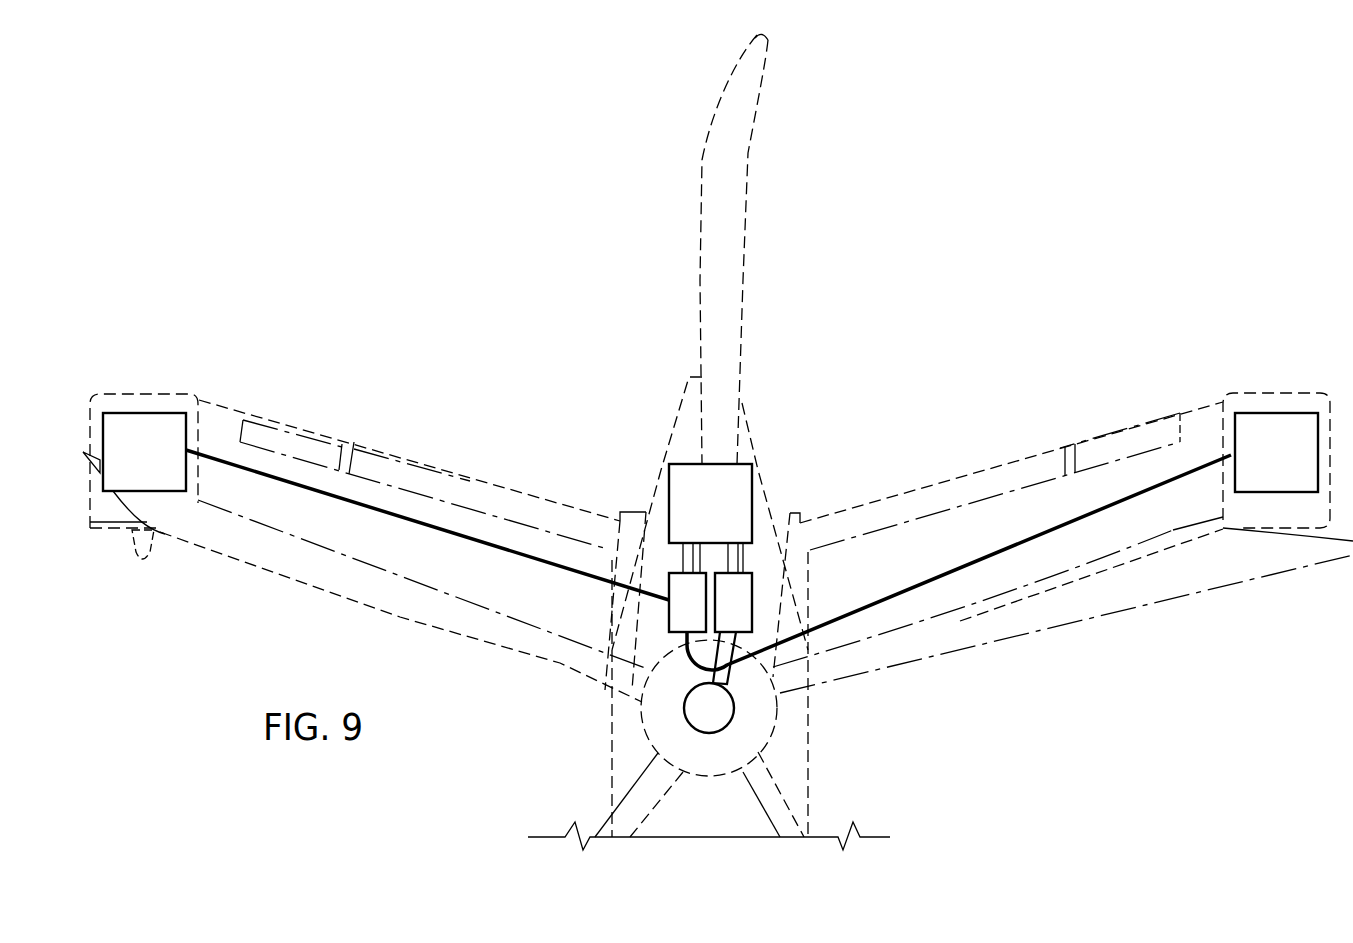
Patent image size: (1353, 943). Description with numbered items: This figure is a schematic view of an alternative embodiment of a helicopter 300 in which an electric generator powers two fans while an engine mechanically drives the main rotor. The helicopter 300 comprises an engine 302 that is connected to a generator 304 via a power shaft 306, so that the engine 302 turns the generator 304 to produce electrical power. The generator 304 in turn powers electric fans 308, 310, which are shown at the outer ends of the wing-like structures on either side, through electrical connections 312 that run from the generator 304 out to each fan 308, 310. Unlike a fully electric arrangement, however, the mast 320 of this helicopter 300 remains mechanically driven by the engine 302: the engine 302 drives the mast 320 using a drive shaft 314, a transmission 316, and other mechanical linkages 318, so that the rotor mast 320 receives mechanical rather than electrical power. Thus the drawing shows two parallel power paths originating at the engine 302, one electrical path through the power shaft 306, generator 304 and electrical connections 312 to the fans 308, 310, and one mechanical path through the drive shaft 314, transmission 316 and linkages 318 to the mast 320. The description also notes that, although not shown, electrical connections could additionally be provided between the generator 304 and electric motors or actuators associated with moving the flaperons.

The helicopter 300 is at (946, 286).
The engine 302 is at (728, 517).
The generator 304 is at (672, 618).
The power shaft 306 is at (680, 553).
The electric fan 308 is at (1295, 465).
The electric fan 310 is at (163, 465).
The electrical connections 312 is at (573, 572).
The drive shaft 314 is at (745, 553).
The transmission 316 is at (753, 618).
The mechanical linkages 318 is at (742, 682).
The mast 320 is at (685, 708).